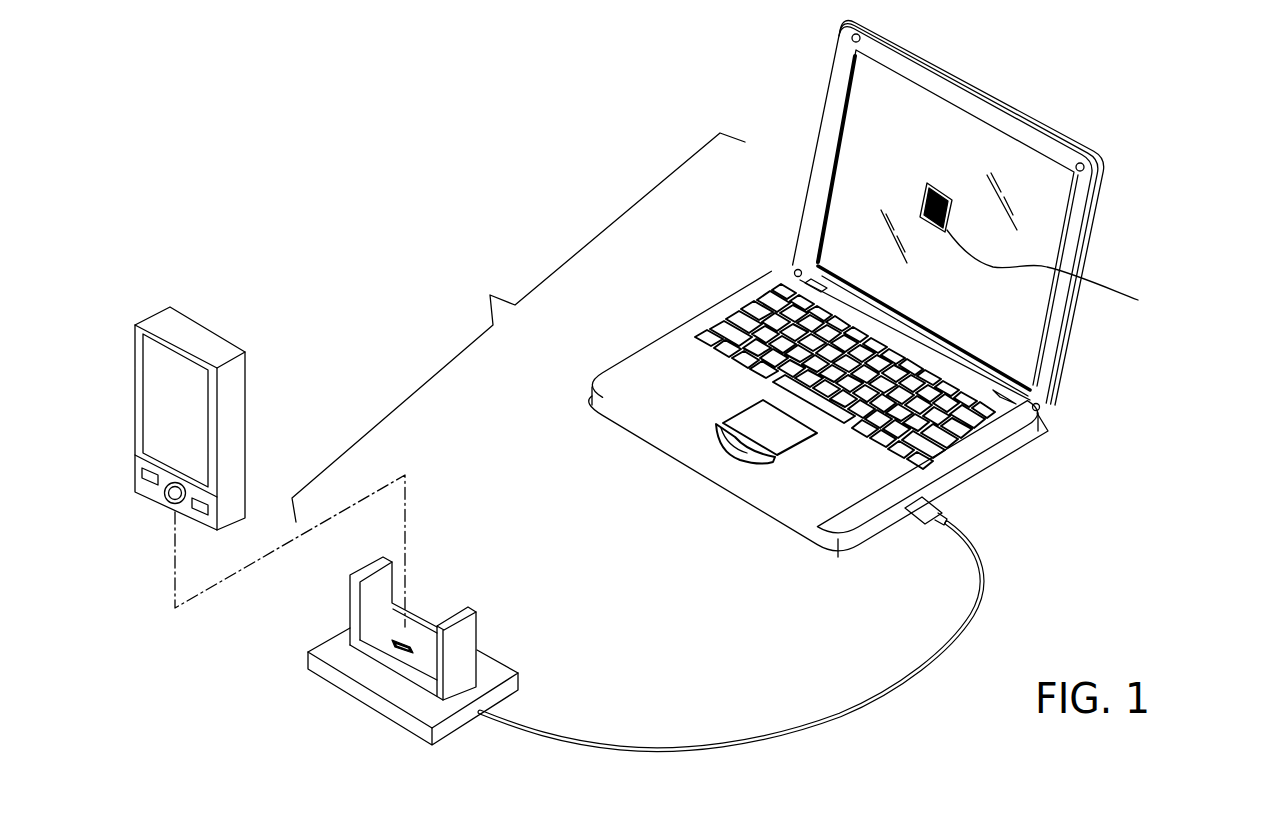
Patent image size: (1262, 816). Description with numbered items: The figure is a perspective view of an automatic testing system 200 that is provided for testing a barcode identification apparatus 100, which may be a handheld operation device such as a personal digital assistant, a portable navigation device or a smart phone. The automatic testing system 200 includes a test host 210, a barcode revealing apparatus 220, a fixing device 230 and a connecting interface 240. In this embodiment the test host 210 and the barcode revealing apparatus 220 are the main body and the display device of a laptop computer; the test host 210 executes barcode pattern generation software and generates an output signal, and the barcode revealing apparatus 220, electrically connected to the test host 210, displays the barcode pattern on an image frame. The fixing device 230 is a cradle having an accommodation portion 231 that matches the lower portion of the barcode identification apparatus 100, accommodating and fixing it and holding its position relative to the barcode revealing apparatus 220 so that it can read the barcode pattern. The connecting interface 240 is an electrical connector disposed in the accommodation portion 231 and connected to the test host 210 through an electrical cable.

The barcode identification apparatus 100 is at (192, 328).
The automatic testing system 200 is at (518, 327).
The test host 210 is at (670, 353).
The barcode revealing apparatus 220 is at (862, 102).
The fixing device 230 is at (357, 593).
The accommodation portion 231 is at (380, 638).
The connecting interface 240 is at (364, 642).